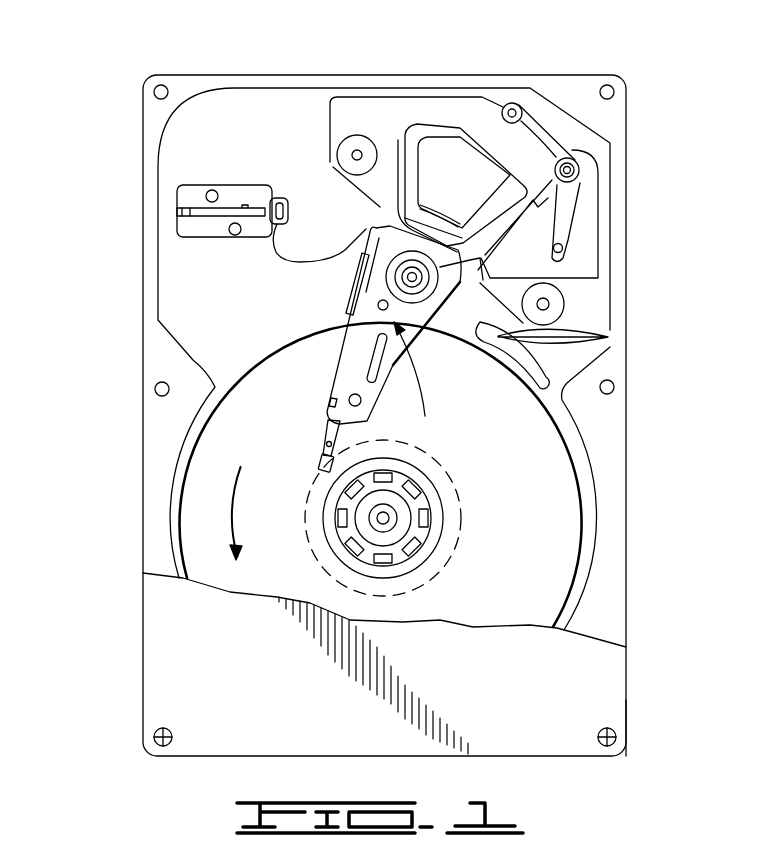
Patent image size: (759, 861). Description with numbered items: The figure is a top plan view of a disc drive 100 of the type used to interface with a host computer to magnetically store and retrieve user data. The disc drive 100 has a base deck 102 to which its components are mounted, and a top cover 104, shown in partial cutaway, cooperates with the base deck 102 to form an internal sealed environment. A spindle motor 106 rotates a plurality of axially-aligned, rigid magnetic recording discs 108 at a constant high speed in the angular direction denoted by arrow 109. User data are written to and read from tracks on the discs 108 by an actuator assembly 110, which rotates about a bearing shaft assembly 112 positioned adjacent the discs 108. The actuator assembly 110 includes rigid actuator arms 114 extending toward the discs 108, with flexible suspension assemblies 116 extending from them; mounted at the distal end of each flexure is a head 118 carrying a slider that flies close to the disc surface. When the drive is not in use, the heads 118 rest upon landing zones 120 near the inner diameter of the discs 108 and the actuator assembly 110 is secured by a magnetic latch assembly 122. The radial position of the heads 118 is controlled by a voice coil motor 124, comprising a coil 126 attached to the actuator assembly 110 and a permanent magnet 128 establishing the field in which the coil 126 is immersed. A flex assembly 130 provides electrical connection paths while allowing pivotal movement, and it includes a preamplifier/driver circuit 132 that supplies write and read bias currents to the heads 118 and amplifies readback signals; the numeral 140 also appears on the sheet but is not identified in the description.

The disc drive 100 is at (152, 53).
The base deck 102 is at (185, 287).
The top cover 104 is at (180, 647).
The spindle motor 106 is at (413, 505).
The magnetic recording discs 108 is at (567, 527).
The arrow 109 is at (238, 503).
The actuator assembly 110 is at (382, 373).
The bearing shaft assembly 112 is at (430, 277).
The actuator arms 114 is at (428, 380).
The flexible suspension assemblies 116 is at (332, 430).
The head 118 is at (323, 457).
The landing zones 120 is at (443, 567).
The magnetic latch assembly 122 is at (570, 210).
The voice coil motor 124 is at (458, 106).
The coil 126 is at (427, 127).
The permanent magnet 128 is at (538, 262).
The flex assembly 130 is at (288, 262).
The preamplifier/driver circuit 132 is at (350, 276).
The housing 140 is at (645, 860).